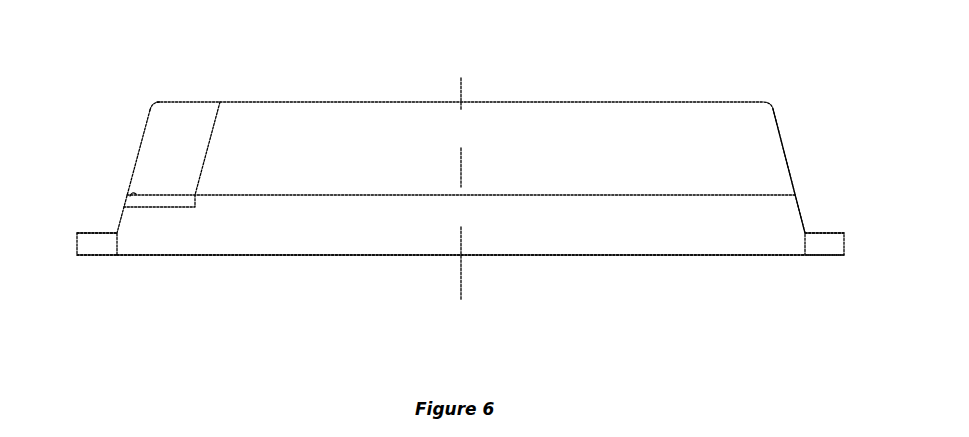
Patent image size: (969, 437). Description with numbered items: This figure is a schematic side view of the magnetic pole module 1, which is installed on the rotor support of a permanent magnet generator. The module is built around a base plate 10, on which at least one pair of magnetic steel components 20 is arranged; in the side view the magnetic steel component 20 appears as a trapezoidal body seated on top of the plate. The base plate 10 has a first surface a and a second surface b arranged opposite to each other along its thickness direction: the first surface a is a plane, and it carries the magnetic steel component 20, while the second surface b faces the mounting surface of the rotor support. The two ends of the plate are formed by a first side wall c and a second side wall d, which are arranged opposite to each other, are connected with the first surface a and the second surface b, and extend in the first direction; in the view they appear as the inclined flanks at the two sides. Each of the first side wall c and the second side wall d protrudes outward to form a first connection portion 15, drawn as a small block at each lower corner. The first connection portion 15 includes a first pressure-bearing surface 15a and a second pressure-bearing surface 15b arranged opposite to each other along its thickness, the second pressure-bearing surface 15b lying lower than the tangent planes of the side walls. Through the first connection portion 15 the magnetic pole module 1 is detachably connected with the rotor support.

The magnetic pole module 1 is at (467, 47).
The magnetic steel component 20 is at (538, 117).
The base plate 10 is at (357, 246).
The first connection portion 15 is at (69, 243).
The first pressure-bearing surface 15a is at (100, 256).
The second pressure-bearing surface 15b is at (102, 233).
The first surface a is at (620, 196).
The second surface b is at (603, 257).
The first side wall c is at (798, 203).
The second side wall d is at (122, 212).